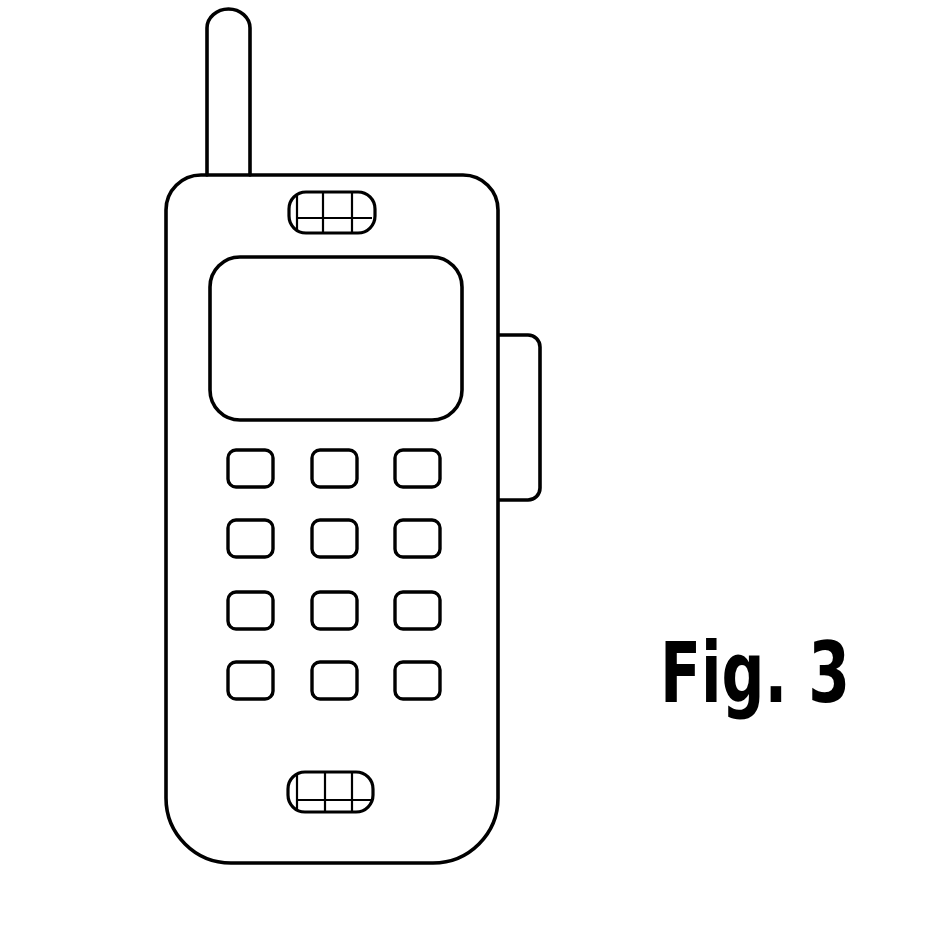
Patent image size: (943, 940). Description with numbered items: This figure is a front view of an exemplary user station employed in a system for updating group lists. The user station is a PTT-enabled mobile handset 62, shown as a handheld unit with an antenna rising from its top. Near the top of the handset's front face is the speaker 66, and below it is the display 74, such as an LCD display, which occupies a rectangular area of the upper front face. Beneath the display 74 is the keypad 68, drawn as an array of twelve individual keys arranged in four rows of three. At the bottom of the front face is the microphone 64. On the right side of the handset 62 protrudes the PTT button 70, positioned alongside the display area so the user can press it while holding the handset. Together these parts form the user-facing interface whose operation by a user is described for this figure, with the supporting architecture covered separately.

The PTT-enabled mobile handset 62 is at (453, 171).
The microphone 64 is at (342, 812).
The speaker 66 is at (323, 192).
The keypad 68 is at (217, 565).
The PTT button 70 is at (540, 405).
The display 74 is at (462, 290).